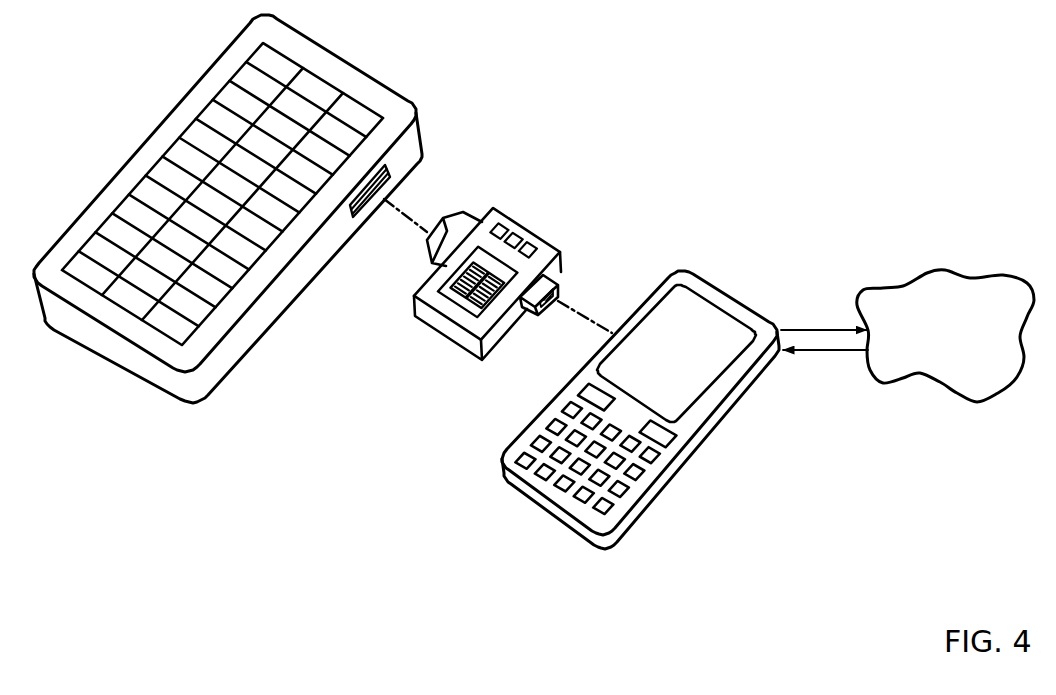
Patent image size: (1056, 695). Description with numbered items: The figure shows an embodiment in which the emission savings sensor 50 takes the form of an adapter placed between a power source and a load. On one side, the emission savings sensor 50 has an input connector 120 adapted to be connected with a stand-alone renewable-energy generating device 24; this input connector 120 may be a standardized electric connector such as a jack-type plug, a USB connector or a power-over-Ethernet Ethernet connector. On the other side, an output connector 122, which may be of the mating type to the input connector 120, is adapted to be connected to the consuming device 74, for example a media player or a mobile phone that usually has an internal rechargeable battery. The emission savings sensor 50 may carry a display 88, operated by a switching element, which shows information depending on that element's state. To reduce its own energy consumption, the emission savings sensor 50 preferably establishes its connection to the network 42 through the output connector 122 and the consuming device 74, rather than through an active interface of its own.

The stand-alone renewable-energy generating device 24 is at (399, 73).
The emission savings sensor 50 is at (535, 216).
The display 88 is at (470, 240).
The input connector 120 is at (477, 207).
The output connector 122 is at (570, 276).
The consuming device 74 is at (747, 286).
The network 42 is at (958, 339).